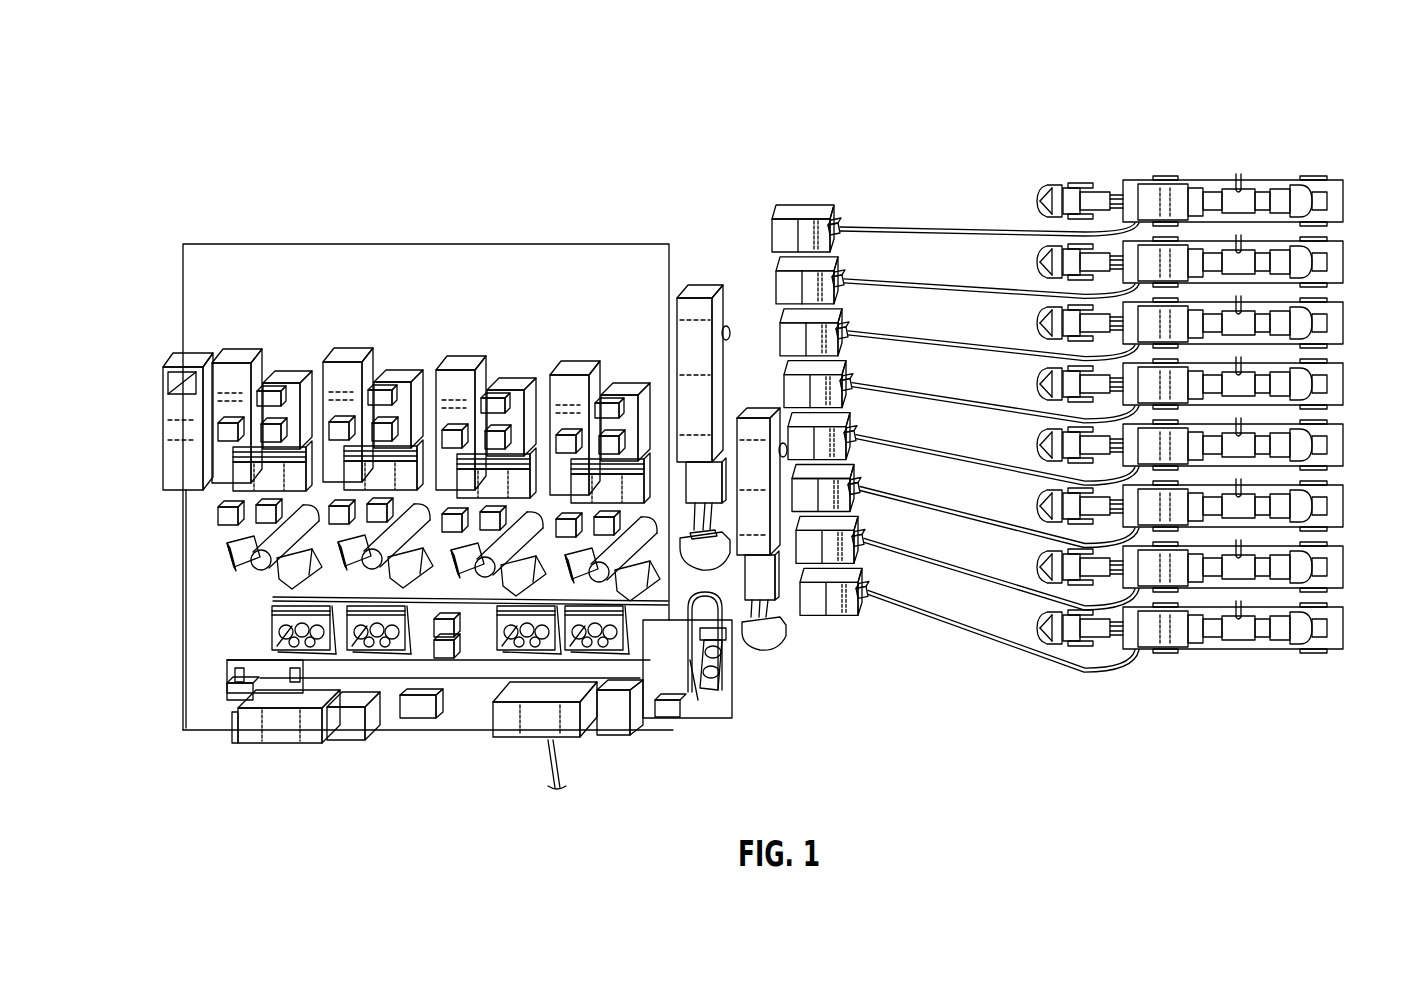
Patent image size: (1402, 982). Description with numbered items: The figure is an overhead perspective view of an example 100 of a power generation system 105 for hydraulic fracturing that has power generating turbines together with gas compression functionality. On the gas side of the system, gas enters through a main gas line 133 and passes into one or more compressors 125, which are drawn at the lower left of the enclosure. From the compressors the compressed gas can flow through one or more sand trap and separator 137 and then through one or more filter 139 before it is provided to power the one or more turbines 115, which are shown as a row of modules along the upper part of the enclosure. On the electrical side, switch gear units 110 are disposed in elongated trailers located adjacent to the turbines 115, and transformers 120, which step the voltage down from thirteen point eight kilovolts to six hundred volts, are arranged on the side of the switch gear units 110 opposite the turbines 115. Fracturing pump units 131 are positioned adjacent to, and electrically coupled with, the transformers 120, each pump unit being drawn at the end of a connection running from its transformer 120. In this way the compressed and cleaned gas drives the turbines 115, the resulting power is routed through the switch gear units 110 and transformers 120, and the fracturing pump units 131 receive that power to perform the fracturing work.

The example 100 is at (205, 88).
The power generation system 105 is at (227, 225).
The switch gear units 110 is at (706, 285).
The turbines 115 is at (640, 345).
The transformers 120 is at (842, 223).
The compressors 125 is at (278, 735).
The fracturing pump units 131 is at (1037, 200).
The main gas line 133 is at (565, 765).
The sand trap and separator 137 is at (728, 668).
The filter 139 is at (388, 648).